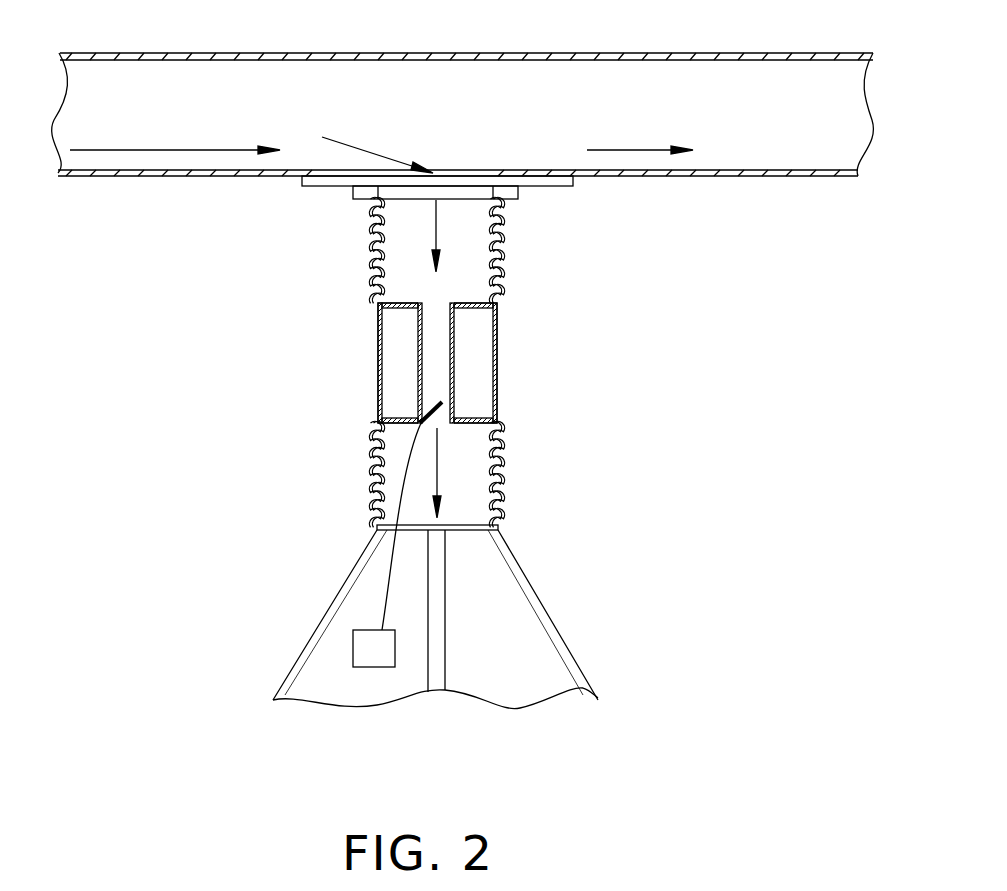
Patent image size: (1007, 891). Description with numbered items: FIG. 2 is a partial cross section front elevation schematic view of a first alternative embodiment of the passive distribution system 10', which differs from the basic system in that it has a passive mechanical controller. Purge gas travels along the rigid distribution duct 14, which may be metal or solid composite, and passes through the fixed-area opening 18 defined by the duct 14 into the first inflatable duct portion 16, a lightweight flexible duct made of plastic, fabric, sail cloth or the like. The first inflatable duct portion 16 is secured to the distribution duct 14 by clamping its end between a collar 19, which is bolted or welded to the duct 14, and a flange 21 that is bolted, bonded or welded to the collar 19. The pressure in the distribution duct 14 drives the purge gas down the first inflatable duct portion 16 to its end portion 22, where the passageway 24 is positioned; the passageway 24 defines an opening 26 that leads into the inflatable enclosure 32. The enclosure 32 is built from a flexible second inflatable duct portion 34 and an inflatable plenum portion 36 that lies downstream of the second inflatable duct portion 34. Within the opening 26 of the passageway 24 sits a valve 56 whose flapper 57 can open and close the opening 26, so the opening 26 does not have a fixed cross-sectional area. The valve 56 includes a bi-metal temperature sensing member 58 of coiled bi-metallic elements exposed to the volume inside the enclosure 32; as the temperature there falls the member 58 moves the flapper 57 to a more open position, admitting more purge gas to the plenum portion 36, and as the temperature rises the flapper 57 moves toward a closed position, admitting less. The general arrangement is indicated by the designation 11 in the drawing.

The passive distribution system 10' is at (463, 91).
The distribution duct 14 is at (688, 174).
The opening 18 is at (455, 167).
The collar 19 is at (300, 178).
The flange 21 is at (520, 193).
The first inflatable duct portion 16 is at (372, 252).
The end portion 22 is at (513, 280).
The filter assembly 11 is at (672, 393).
The passageway 24 is at (457, 355).
The opening 26 is at (434, 345).
The valve 56 is at (412, 408).
The flapper 57 is at (435, 408).
The second inflatable duct portion 34 is at (377, 443).
The inflatable enclosure 32 is at (518, 535).
The inflatable plenum portion 36 is at (582, 665).
The bi-metal temperature sensing member 58 is at (373, 647).